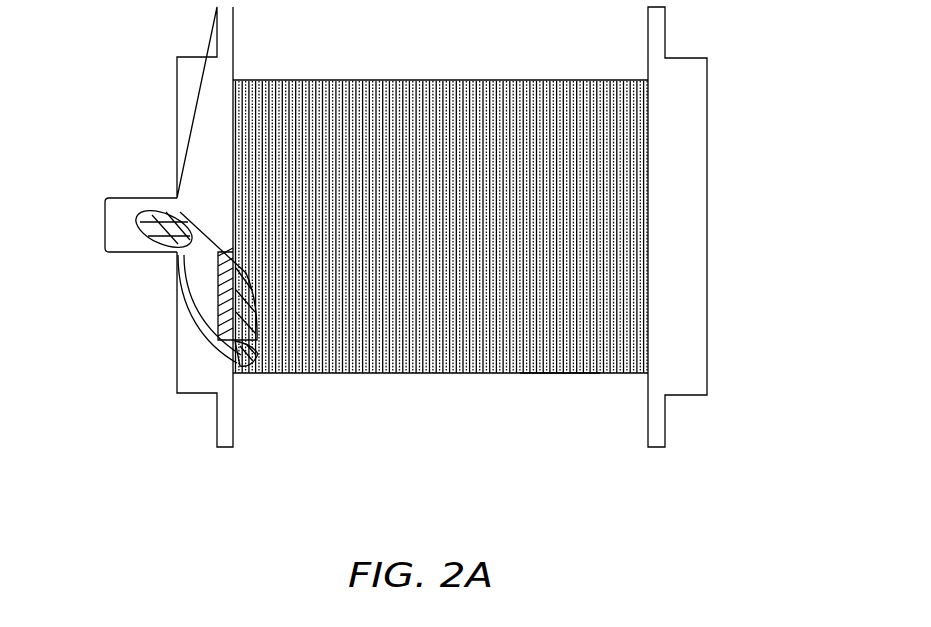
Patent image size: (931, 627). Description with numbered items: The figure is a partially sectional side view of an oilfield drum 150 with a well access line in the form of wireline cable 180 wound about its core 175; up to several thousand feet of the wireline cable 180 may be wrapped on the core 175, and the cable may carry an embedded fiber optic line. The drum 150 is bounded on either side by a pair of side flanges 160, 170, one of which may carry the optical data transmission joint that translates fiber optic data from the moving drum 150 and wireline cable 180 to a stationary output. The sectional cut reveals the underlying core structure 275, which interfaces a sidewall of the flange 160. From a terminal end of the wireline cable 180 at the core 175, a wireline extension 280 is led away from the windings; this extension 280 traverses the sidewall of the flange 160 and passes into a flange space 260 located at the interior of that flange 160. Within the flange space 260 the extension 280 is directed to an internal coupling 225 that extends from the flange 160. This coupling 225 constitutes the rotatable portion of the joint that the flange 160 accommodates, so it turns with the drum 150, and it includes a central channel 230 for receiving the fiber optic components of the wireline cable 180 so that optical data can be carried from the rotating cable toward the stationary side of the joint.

The drum 150 is at (743, 110).
The flange 160 is at (185, 88).
The side flange 170 is at (695, 342).
The core 175 is at (560, 392).
The wireline cable 180 is at (450, 80).
The internal coupling 225 is at (110, 232).
The central channel 230 is at (155, 212).
The flange space 260 is at (304, 80).
The core structure 275 is at (260, 367).
The wireline extension 280 is at (173, 327).